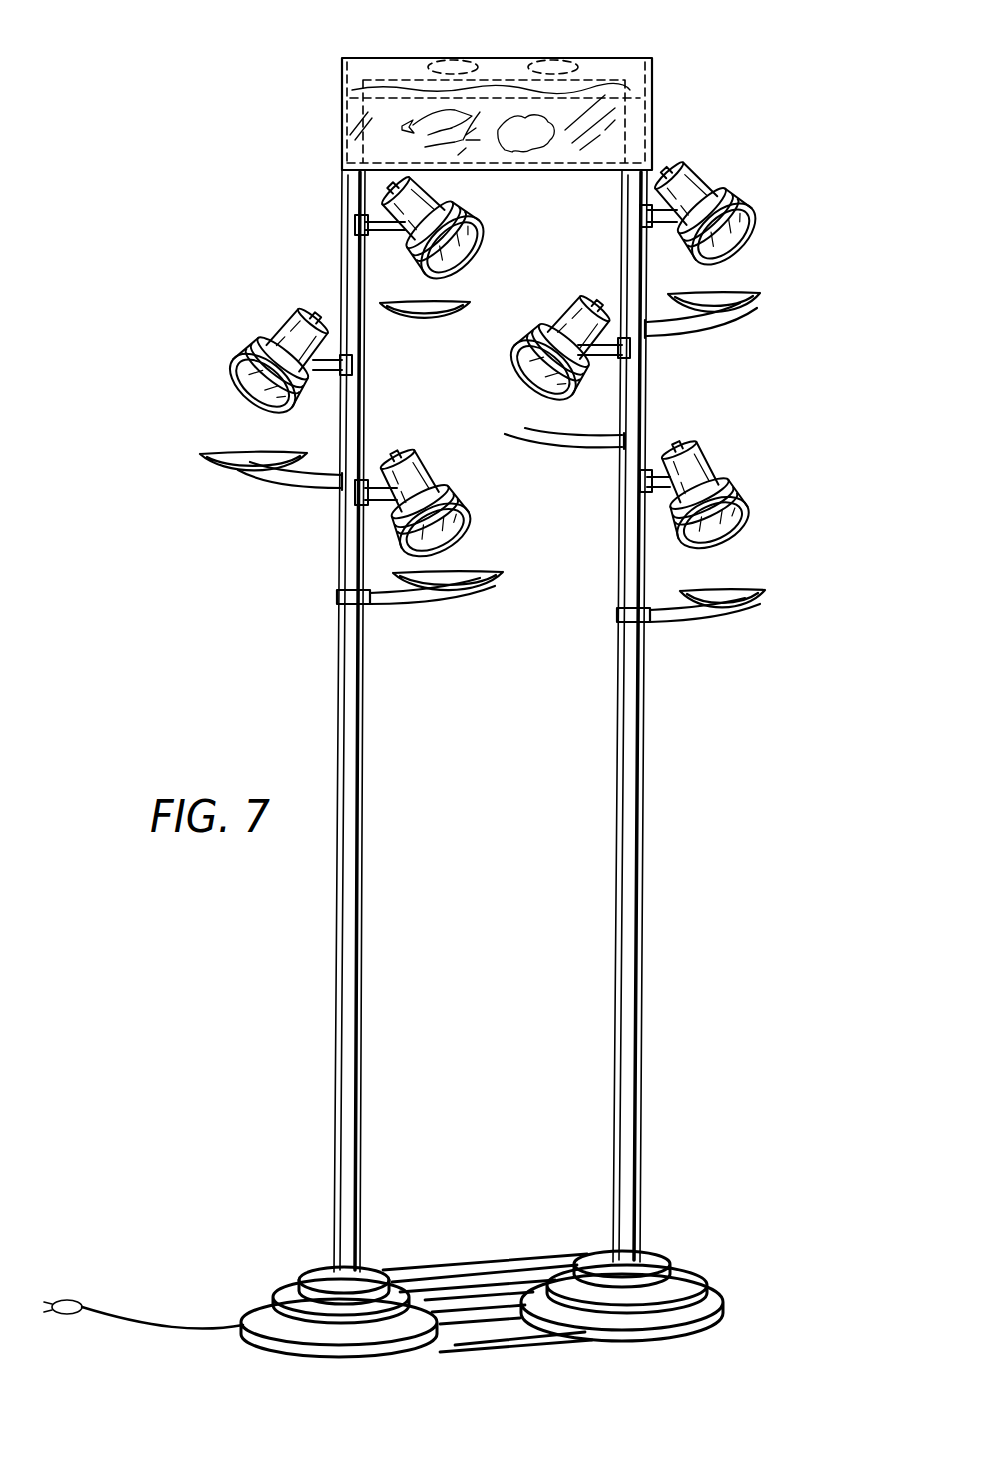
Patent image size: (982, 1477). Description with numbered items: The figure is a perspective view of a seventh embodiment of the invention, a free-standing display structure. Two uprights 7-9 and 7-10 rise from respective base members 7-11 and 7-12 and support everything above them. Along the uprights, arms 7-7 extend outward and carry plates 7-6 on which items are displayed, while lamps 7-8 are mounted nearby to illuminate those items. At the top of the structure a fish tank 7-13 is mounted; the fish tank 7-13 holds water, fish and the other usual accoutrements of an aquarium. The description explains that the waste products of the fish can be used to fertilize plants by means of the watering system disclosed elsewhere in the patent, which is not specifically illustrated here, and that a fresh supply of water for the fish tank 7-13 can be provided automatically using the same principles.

The plates 7-6 is at (457, 318).
The arms 7-7 is at (695, 335).
The lamps 7-8 is at (747, 207).
The upright 7-9 is at (362, 790).
The upright 7-10 is at (617, 870).
The base member 7-11 is at (293, 1280).
The base member 7-12 is at (595, 1250).
The fish tank 7-13 is at (577, 97).